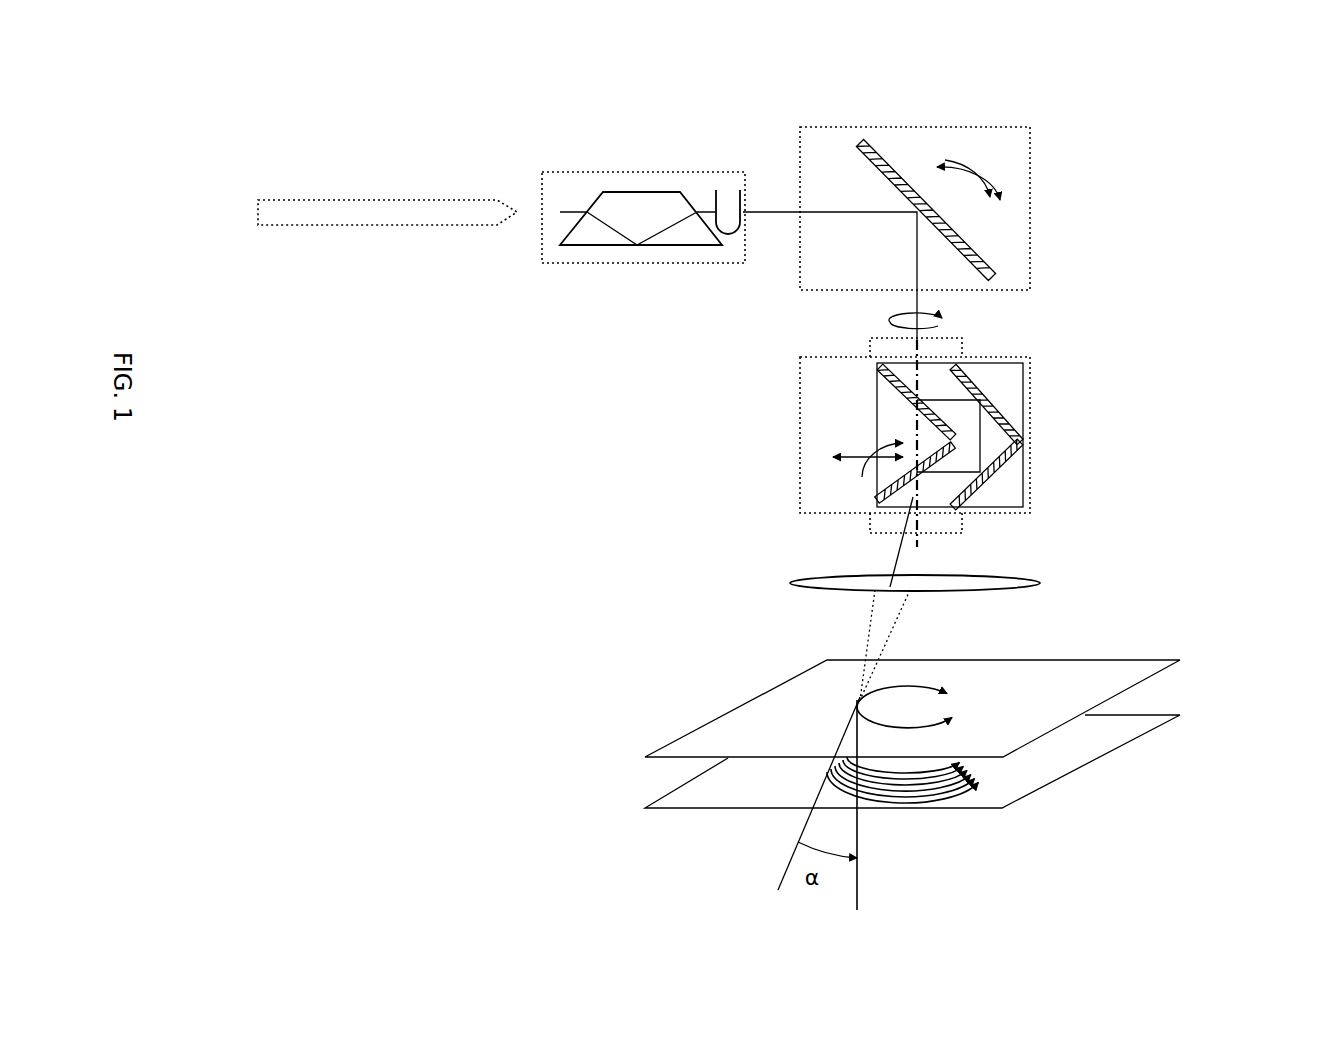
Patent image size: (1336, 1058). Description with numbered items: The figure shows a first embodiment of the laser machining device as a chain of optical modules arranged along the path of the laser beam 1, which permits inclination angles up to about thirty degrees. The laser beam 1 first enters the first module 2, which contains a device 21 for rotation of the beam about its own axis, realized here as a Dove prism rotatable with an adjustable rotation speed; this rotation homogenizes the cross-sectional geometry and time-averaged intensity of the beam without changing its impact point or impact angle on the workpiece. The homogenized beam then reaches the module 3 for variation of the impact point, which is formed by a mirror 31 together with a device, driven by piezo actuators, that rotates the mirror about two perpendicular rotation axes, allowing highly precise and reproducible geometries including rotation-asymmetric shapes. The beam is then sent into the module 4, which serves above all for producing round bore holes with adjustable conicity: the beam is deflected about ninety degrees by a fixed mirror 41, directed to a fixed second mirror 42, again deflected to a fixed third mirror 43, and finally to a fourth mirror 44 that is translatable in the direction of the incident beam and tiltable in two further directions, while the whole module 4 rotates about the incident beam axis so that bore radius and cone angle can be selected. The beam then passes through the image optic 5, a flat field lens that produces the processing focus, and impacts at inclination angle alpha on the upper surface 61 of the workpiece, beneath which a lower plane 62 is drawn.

The laser beam 1 is at (380, 183).
The first module 2 is at (557, 185).
The device for rotation of the laser beam 21 is at (637, 208).
The module for variation of the impact point 3 is at (810, 125).
The mirror 31 is at (900, 168).
The module 4 is at (1030, 357).
The mirror 41 is at (930, 413).
The second mirror 42 is at (1010, 417).
The third mirror 43 is at (1010, 455).
The fourth mirror 44 is at (890, 483).
The image optic 5 is at (1040, 582).
The upper surface 61 is at (1155, 675).
The workpiece lower surface 62 is at (1147, 732).